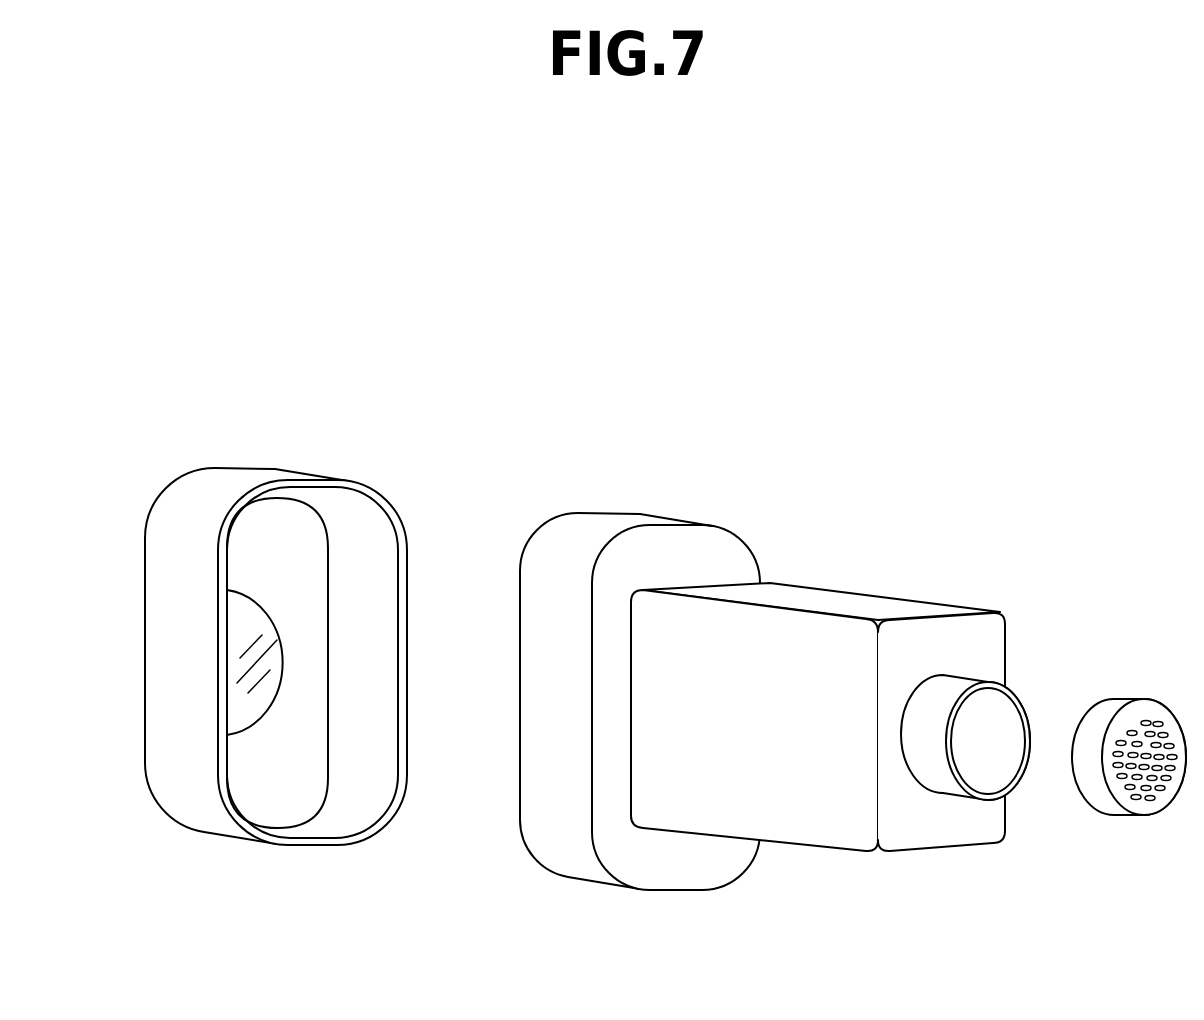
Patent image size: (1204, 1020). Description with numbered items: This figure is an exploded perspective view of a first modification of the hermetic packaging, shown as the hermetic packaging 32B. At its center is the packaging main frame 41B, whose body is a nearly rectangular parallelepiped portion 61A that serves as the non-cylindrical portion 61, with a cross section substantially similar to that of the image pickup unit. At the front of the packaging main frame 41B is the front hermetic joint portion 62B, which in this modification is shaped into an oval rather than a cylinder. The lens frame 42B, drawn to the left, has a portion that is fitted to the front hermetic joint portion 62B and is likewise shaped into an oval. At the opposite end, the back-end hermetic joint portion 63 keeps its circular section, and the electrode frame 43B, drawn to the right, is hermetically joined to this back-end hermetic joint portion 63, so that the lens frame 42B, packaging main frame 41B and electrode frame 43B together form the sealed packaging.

The hermetic packaging 32B is at (1190, 353).
The lens frame 42B is at (272, 470).
The packaging main frame 41B is at (1022, 438).
The front hermetic joint portion 62B is at (647, 512).
The nearly rectangular parallelepiped portion 61A is at (826, 584).
The non-cylindrical portion 61 is at (818, 717).
The back-end hermetic joint portion 63 is at (957, 683).
The electrode frame 43B is at (1124, 698).